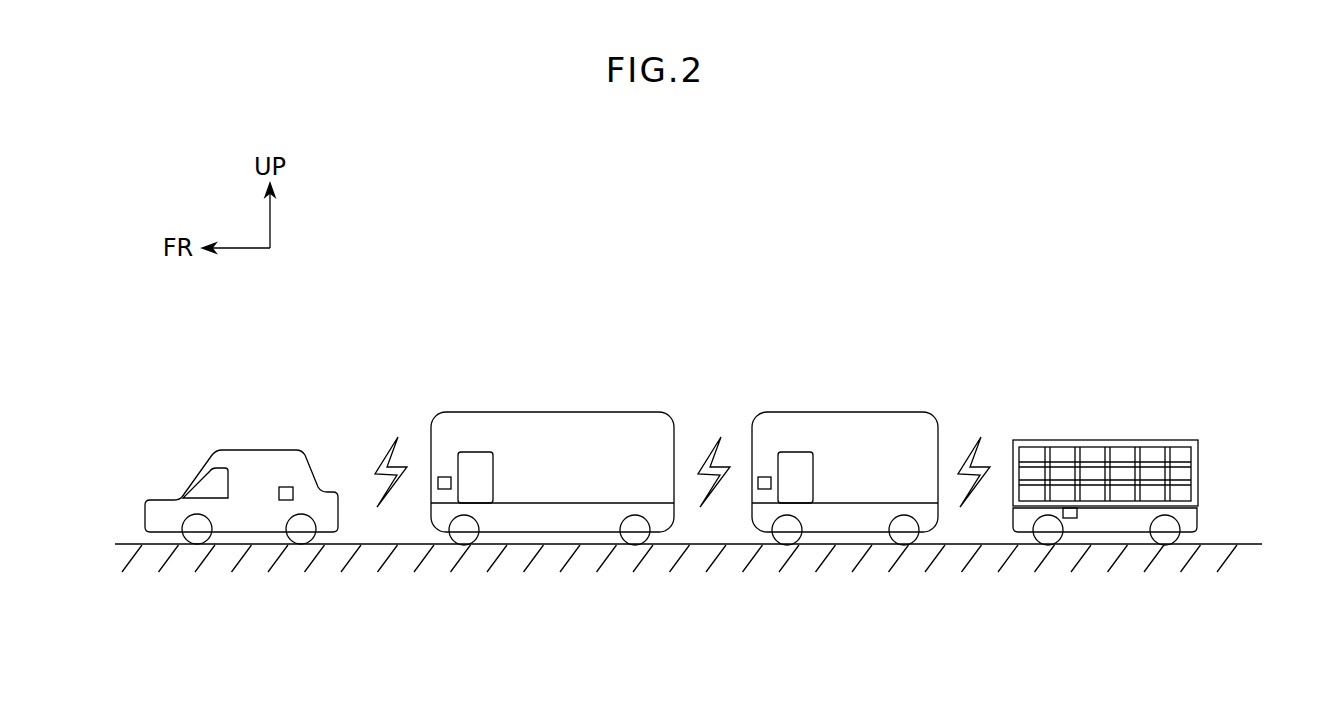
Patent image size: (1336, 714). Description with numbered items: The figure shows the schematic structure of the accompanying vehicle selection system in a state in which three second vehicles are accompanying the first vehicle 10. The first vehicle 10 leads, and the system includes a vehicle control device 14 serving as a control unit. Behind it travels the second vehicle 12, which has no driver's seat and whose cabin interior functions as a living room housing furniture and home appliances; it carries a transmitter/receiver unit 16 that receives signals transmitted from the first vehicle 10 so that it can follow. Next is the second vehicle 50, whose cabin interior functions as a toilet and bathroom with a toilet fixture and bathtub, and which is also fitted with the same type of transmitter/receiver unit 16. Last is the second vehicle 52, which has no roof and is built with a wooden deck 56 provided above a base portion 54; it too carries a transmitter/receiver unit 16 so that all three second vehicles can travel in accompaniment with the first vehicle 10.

The first vehicle 10 is at (237, 450).
The second vehicle 12 is at (532, 412).
The vehicle control device 14 is at (288, 487).
The transmitter/receiver unit 16 is at (444, 477).
The second vehicle 50 is at (850, 412).
The second vehicle 52 is at (1113, 440).
The base portion 54 is at (1200, 517).
The wooden deck 56 is at (1200, 462).